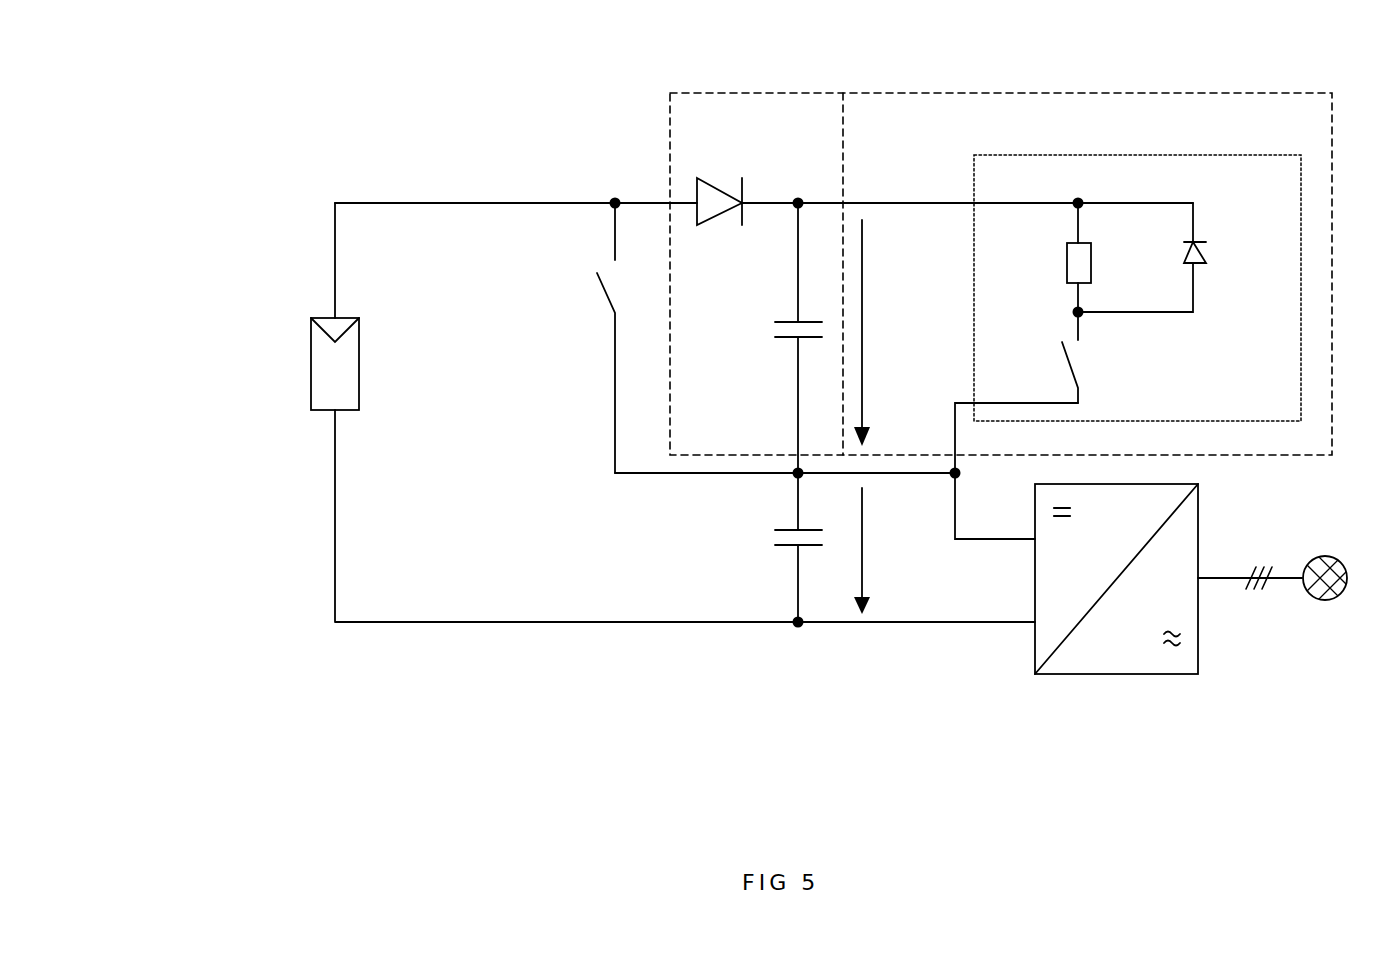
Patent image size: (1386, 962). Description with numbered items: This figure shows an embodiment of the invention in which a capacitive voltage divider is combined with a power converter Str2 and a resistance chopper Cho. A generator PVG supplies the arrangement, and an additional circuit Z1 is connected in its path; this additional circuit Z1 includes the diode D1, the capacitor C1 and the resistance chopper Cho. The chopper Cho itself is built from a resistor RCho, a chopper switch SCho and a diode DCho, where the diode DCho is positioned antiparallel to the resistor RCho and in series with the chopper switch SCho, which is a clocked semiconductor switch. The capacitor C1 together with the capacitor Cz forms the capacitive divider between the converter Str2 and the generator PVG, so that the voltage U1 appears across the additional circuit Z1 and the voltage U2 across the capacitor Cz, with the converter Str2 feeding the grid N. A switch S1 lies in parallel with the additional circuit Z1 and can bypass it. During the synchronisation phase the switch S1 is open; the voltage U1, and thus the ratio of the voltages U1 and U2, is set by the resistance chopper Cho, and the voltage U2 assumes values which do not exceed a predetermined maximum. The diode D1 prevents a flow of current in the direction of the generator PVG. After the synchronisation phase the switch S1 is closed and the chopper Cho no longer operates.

The generator PVG is at (292, 364).
The switch S1 is at (591, 336).
The additional circuit Z1 is at (995, 92).
The diode D1 is at (720, 174).
The capacitor C1 is at (783, 338).
The intermediate circuit capacitor Cz is at (783, 550).
The voltage U1 is at (886, 333).
The voltage U2 is at (880, 551).
The resistance chopper Cho is at (1126, 297).
The resistor RCho is at (1040, 269).
The diode DCho is at (1185, 257).
The chopper switch SCho is at (1033, 372).
The inverter Str2 is at (1116, 603).
The grid N is at (1279, 592).